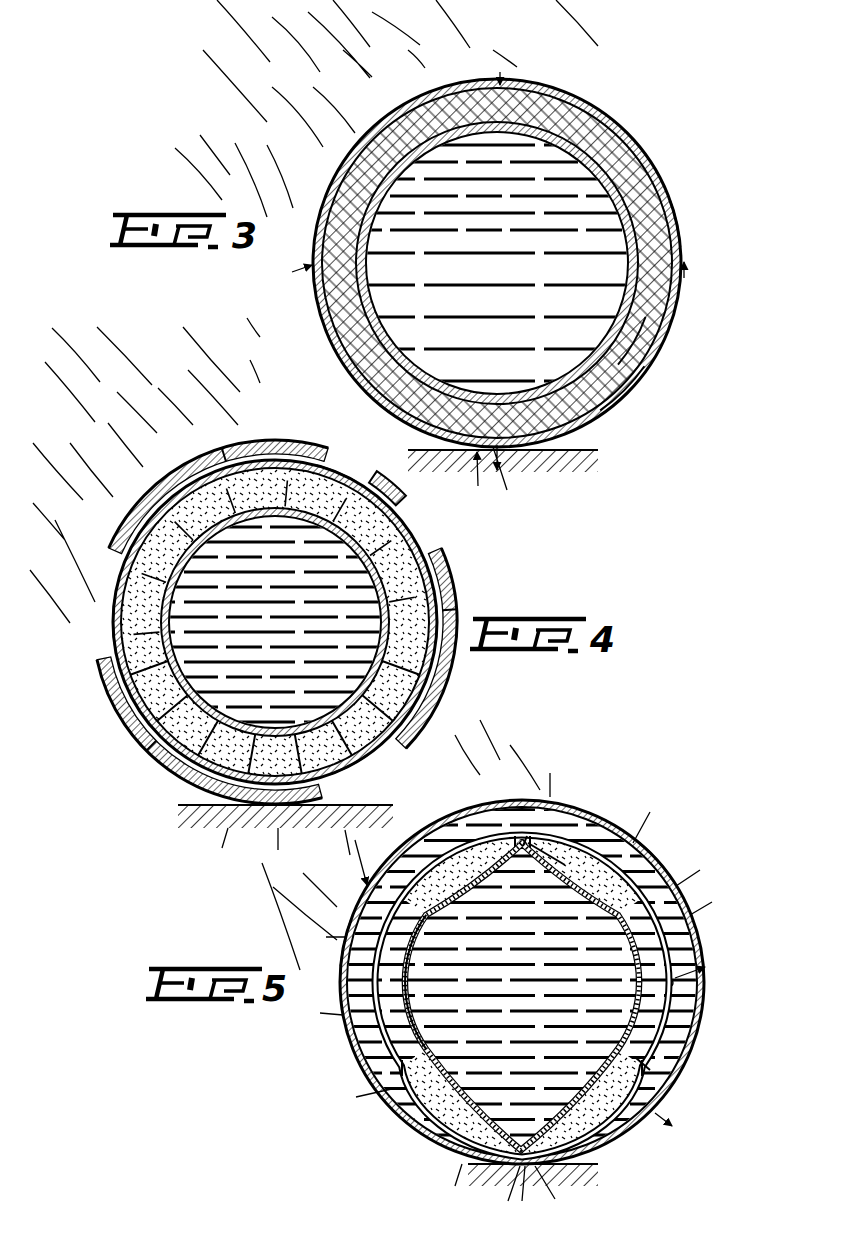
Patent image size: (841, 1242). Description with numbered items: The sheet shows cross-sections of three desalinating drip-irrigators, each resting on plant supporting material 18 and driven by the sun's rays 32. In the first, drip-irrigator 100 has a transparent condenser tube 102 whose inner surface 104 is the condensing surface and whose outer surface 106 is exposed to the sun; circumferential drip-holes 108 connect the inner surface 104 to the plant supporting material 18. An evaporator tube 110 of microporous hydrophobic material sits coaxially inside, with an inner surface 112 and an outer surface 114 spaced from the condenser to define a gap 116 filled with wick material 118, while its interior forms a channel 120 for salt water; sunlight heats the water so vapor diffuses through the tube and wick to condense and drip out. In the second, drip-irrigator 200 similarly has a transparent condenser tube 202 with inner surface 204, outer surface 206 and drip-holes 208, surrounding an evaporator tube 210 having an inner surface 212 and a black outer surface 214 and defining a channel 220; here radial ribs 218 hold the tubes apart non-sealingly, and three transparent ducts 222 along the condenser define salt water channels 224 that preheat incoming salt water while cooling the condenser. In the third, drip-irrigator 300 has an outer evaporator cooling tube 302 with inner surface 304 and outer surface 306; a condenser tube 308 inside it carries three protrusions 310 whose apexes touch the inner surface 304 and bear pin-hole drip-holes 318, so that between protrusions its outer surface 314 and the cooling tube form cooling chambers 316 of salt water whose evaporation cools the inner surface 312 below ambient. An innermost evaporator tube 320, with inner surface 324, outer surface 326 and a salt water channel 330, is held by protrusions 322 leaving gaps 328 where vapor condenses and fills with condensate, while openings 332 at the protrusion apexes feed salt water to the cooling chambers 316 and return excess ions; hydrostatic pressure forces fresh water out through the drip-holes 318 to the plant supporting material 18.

In FIG. 3, the plant supporting material 18 is at (580, 464).
In FIG. 4, the plant supporting material 18 is at (213, 826).
In FIG. 5, the plant supporting material 18 is at (580, 1176).
In FIG. 3, the sun's rays 32 is at (213, 68).
In FIG. 4, the sun's rays 32 is at (83, 410).
In FIG. 5, the sun's rays 32 is at (540, 760).
In FIG. 3, the desalinating drip-irrigator 100 is at (532, 232).
In FIG. 3, the condenser tube 102 is at (665, 188).
In FIG. 3, the inner surface 104 is at (633, 133).
In FIG. 3, the outer surface 106 is at (683, 232).
In FIG. 3, the drip-holes 108 is at (498, 76).
In FIG. 3, the evaporator tube 110 is at (397, 334).
In FIG. 3, the inner surface 112 is at (378, 304).
In FIG. 3, the outer surface 114 is at (370, 262).
In FIG. 3, the gap 116 is at (622, 357).
In FIG. 3, the wick material 118 is at (617, 403).
In FIG. 3, the channel 120 is at (537, 281).
In FIG. 4, the desalinating drip-irrigator 200 is at (292, 611).
In FIG. 4, the condenser tube 202 is at (334, 464).
In FIG. 4, the inner surface 204 is at (402, 503).
In FIG. 4, the outer surface 206 is at (375, 484).
In FIG. 4, the drip-holes 208 is at (357, 470).
In FIG. 4, the evaporator tube 210 is at (184, 681).
In FIG. 4, the inner surface 212 is at (172, 661).
In FIG. 4, the outer surface 214 is at (160, 626).
In FIG. 4, the ribs 218 is at (392, 650).
In FIG. 4, the channel 220 is at (275, 622).
In FIG. 4, the ducts 222 is at (298, 440).
In FIG. 4, the salt water channels 224 is at (224, 451).
In FIG. 5, the desalinating drip-irrigator 300 is at (467, 914).
In FIG. 5, the evaporator cooling tube 302 is at (598, 812).
In FIG. 5, the inner surface 304 is at (648, 848).
In FIG. 5, the outer surface 306 is at (624, 836).
In FIG. 5, the condenser tube 308 is at (693, 1018).
In FIG. 5, the protrusions 310 is at (665, 867).
In FIG. 5, the inner surface 312 is at (690, 987).
In FIG. 5, the outer surface 314 is at (655, 1070).
In FIG. 5, the cooling chamber 316 is at (560, 812).
In FIG. 5, the drip-holes 318 is at (422, 1193).
In FIG. 5, the evaporator tube 320 is at (416, 978).
In FIG. 5, the protrusions 322 is at (523, 843).
In FIG. 5, the inner surface 324 is at (420, 1028).
In FIG. 5, the outer surface 326 is at (344, 955).
In FIG. 5, the gap 328 is at (690, 914).
In FIG. 5, the channel 330 is at (560, 1014).
In FIG. 5, the openings 332 is at (533, 843).